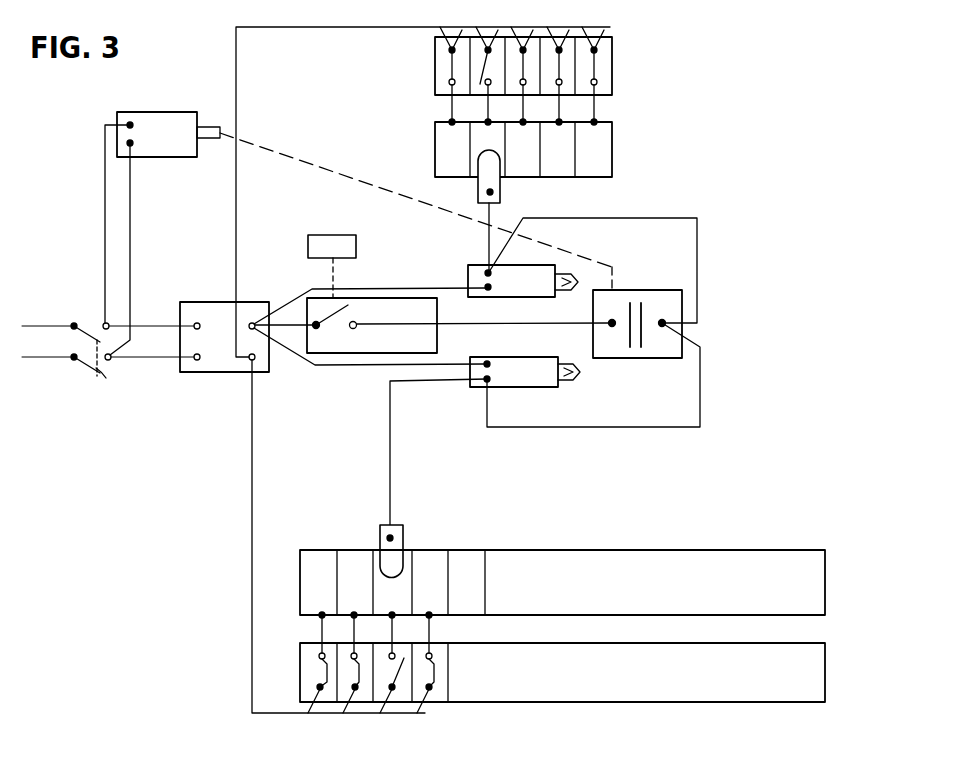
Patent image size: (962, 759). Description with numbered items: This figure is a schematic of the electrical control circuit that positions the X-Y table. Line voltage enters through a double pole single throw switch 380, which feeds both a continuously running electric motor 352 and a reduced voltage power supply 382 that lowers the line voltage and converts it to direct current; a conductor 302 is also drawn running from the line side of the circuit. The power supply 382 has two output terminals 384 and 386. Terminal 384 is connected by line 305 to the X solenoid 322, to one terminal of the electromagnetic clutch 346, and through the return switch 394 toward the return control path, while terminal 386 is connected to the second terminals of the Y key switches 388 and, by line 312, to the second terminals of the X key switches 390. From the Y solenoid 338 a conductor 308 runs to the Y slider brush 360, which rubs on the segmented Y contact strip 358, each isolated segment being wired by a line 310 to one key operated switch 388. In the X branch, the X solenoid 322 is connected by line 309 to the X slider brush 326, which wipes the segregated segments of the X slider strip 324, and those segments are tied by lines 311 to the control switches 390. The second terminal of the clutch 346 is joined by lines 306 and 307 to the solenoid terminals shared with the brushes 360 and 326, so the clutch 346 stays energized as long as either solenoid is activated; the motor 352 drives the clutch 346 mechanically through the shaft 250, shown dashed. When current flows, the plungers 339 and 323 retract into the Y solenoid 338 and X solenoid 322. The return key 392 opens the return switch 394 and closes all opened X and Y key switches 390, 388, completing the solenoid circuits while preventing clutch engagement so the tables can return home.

The power conductor 302 is at (239, 82).
The continuously running electric motor 352 is at (192, 112).
The shaft 250 is at (300, 152).
The double pole single throw switch 380 is at (104, 374).
The reduced voltage power supply 382 is at (181, 311).
The terminal 384 is at (254, 322).
The terminal 386 is at (255, 360).
The line 312 is at (251, 513).
The return key 392 is at (358, 258).
The return switch 394 is at (438, 337).
The line 305 is at (366, 366).
The key operated switch 388 is at (550, 36).
The line 310 is at (562, 104).
The Y contact strip 358 is at (436, 141).
The Y slider brush 360 is at (478, 190).
The conductor 308 is at (488, 250).
The Y solenoid 338 is at (511, 292).
The plunger 339 is at (570, 297).
The line 306 is at (596, 218).
The electromagnetic clutch 346 is at (682, 323).
The line 307 is at (549, 430).
The X solenoid 322 is at (514, 383).
The plunger 323 is at (576, 383).
The line 309 is at (393, 477).
The X slider brush 326 is at (379, 538).
The X slider strip 324 is at (603, 550).
The lines 311 is at (352, 629).
The control switch 390 is at (420, 712).